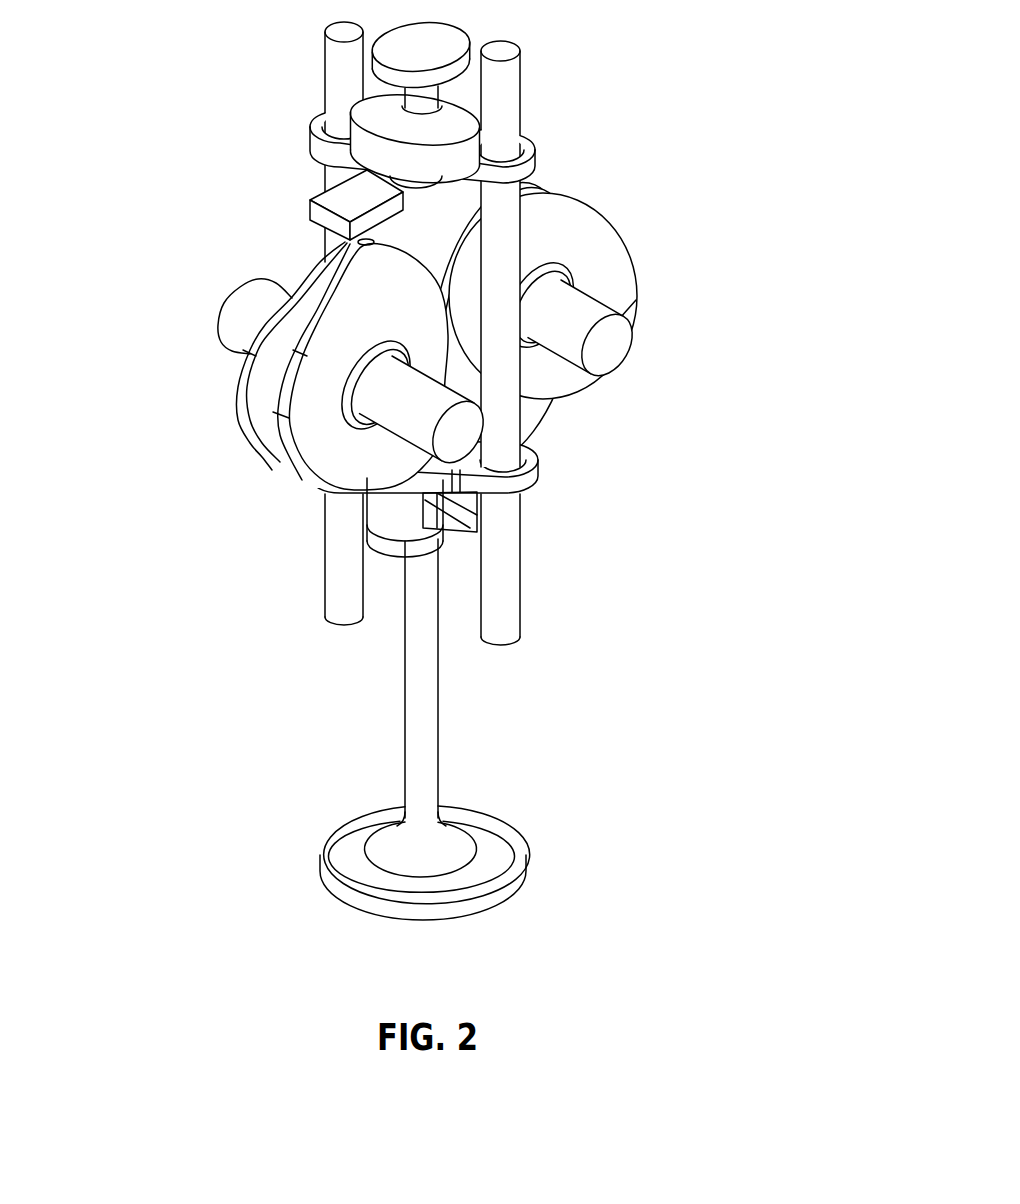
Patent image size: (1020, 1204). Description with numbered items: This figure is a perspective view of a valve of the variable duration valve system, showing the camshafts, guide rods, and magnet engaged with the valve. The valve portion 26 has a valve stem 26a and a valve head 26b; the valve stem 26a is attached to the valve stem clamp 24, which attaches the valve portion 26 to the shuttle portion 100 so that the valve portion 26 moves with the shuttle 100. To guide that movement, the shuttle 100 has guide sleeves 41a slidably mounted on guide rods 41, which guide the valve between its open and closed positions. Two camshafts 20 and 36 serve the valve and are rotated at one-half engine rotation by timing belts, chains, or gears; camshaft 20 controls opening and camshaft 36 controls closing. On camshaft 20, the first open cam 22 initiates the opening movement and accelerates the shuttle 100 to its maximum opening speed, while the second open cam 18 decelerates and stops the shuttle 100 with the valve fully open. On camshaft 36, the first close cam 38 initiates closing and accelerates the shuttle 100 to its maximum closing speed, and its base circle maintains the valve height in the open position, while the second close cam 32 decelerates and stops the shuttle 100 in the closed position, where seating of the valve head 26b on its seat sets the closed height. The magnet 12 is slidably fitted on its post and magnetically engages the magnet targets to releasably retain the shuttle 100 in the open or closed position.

The shuttle portion 100 is at (438, 469).
The magnet 12 is at (422, 122).
The second open cam 18 is at (290, 306).
The first open cam 22 is at (318, 423).
The camshaft 20 is at (467, 417).
The second close cam 32 is at (578, 258).
The camshaft 36 is at (608, 337).
The first close cam 38 is at (540, 183).
The valve stem clamp 24 is at (413, 512).
The valve portion 26 is at (553, 729).
The valve stem 26a is at (430, 713).
The valve head 26b is at (517, 885).
The guide rods 41 is at (340, 59).
The guide sleeves 41a is at (313, 125).